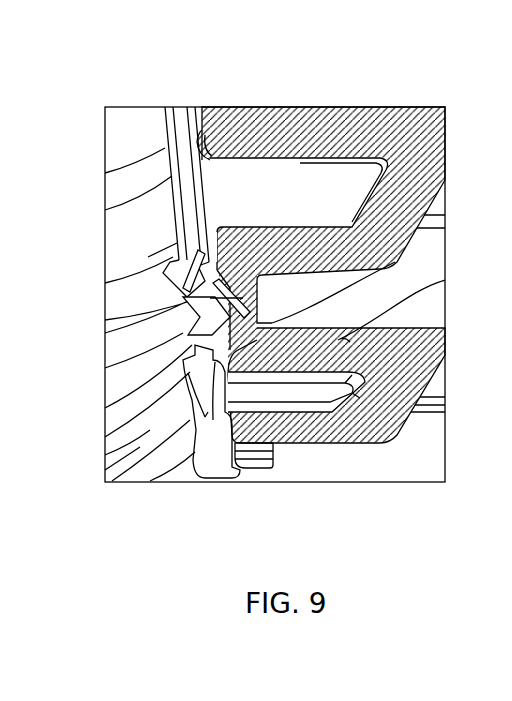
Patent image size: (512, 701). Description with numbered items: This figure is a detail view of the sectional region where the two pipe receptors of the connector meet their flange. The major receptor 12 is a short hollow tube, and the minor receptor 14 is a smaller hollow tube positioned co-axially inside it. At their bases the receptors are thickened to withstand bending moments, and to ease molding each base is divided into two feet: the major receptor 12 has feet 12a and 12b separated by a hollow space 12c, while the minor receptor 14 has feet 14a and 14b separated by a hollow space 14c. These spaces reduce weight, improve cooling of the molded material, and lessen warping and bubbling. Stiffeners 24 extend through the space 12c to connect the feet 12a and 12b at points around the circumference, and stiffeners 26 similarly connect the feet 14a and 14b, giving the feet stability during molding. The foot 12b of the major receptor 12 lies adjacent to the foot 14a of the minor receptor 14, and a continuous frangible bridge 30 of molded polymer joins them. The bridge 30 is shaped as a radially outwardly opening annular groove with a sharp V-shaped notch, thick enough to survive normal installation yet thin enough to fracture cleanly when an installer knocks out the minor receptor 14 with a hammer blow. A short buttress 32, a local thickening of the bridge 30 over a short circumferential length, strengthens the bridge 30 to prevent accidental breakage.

The major receptor 12 is at (418, 150).
The foot 12a is at (284, 128).
The foot 12b is at (349, 237).
The hollow space 12c is at (222, 168).
The minor receptor 14 is at (435, 345).
The foot 14a is at (445, 279).
The foot 14b is at (323, 430).
The hollow space 14c is at (263, 398).
The stiffeners 24 is at (178, 197).
The stiffeners 26 is at (192, 463).
The frangible bridge 30 is at (170, 273).
The buttress 32 is at (185, 320).